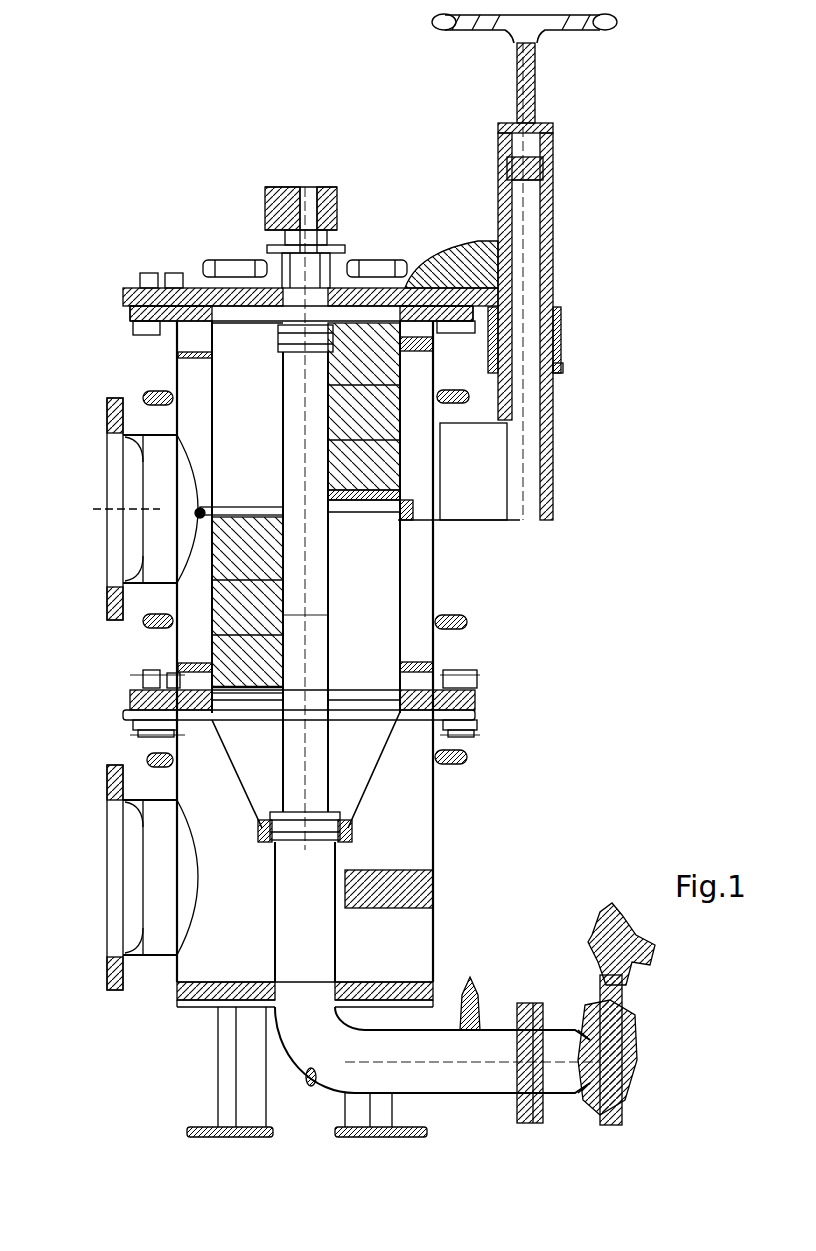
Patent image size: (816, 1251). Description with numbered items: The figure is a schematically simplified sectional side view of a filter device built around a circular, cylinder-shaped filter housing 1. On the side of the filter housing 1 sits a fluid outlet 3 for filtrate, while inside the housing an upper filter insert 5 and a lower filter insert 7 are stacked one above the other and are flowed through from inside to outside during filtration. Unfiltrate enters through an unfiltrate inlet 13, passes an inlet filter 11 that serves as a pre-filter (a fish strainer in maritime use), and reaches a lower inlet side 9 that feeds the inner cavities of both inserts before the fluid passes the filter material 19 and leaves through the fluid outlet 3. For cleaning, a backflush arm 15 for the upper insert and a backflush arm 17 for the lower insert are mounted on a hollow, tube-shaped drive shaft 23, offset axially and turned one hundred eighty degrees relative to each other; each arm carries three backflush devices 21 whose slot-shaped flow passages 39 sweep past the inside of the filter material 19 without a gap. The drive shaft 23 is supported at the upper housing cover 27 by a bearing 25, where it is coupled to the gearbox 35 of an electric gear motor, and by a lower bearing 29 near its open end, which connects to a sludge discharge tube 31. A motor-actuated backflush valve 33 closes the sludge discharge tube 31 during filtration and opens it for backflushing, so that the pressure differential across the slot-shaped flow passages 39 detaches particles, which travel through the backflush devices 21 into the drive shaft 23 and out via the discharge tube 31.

The filter housing 1 is at (110, 680).
The fluid outlet 3 is at (110, 458).
The upper filter insert 5 is at (503, 402).
The lower filter insert 7 is at (403, 582).
The inlet side 9 is at (437, 740).
The inlet filter 11 is at (237, 783).
The unfiltrate inlet 13 is at (130, 807).
The backflush arm 15 is at (330, 412).
The backflush arm 17 is at (287, 617).
The filter material 19 is at (205, 380).
The backflush devices 21 is at (437, 368).
The drive shaft 23 is at (330, 778).
The bearing 25 is at (283, 305).
The upper housing cover 27 is at (192, 283).
The lower bearing 29 is at (345, 838).
The sludge discharge tube 31 is at (320, 1087).
The backflush valve 33 is at (630, 1053).
The gearbox 35 is at (340, 212).
The slot-shaped flow passages 39 is at (440, 340).